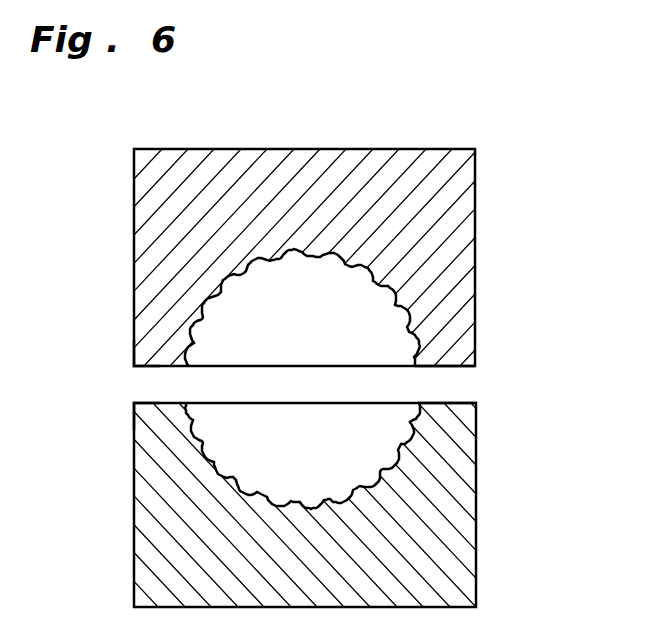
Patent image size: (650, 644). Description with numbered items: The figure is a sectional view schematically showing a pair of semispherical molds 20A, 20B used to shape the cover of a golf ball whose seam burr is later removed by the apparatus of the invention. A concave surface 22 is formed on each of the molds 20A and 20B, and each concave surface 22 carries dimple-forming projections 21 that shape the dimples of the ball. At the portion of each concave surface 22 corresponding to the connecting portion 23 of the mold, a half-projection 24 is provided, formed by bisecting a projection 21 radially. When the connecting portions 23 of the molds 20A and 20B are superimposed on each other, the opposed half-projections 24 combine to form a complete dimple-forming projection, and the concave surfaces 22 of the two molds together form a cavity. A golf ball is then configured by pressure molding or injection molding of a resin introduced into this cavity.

The semispherical mold 20A is at (462, 244).
The semispherical mold 20B is at (466, 430).
The dimple-forming projection 21 is at (408, 307).
The concave surface 22 is at (386, 274).
The connecting portion 23 is at (147, 367).
The half-projection 24 is at (423, 360).